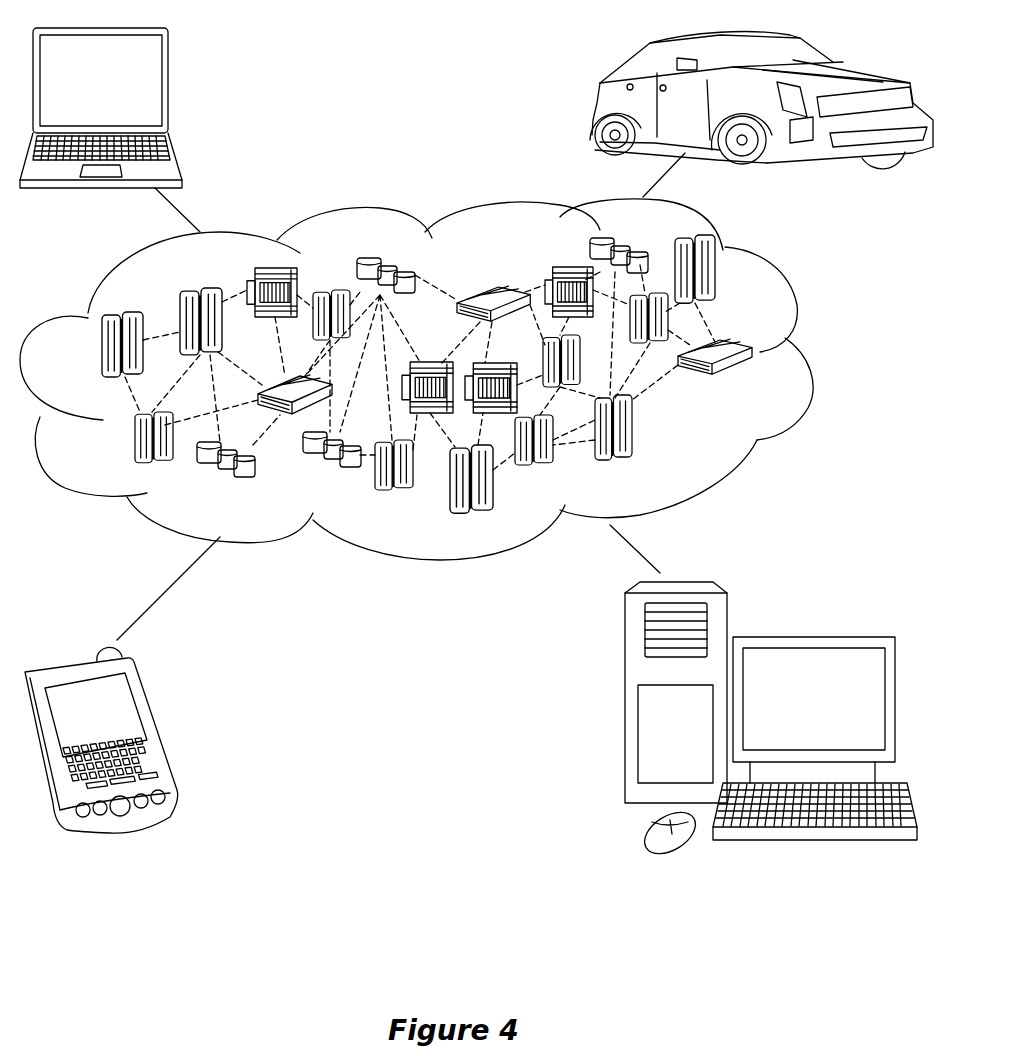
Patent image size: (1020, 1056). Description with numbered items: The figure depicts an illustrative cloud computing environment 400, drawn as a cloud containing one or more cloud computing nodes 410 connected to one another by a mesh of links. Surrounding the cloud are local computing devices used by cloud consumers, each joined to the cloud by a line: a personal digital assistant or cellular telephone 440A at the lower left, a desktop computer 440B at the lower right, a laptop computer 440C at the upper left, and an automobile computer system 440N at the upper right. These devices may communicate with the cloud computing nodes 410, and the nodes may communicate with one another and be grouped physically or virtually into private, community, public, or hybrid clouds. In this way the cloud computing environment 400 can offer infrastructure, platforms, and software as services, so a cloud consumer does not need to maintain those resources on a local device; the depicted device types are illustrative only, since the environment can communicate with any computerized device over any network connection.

The cloud computing environment 400 is at (810, 353).
The cloud computing nodes 410 is at (757, 385).
The personal digital assistant (PDA) or cellular telephone 440A is at (158, 728).
The desktop computer 440B is at (810, 635).
The laptop computer 440C is at (168, 88).
The automobile computer system 440N is at (598, 103).